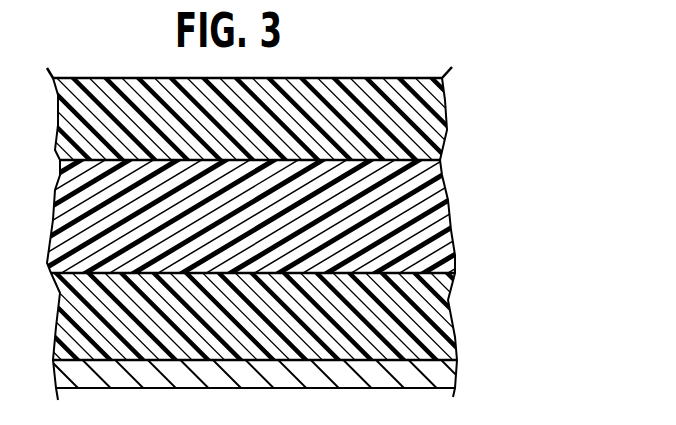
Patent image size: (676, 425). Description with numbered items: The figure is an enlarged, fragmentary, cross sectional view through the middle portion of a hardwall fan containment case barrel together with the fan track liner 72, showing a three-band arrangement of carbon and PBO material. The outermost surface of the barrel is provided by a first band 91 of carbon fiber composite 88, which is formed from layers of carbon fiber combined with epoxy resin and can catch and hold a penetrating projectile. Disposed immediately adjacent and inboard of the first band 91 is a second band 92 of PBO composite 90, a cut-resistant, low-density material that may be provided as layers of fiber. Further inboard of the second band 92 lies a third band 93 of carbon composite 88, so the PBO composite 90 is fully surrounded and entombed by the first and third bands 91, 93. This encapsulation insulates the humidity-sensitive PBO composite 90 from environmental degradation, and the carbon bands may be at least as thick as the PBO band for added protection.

The carbon fiber composite 88 is at (276, 192).
The PBO composite 90 is at (422, 185).
The first band 91 is at (443, 112).
The second band 92 is at (450, 226).
The third band 93 is at (450, 335).
The fan track liner 72 is at (435, 378).